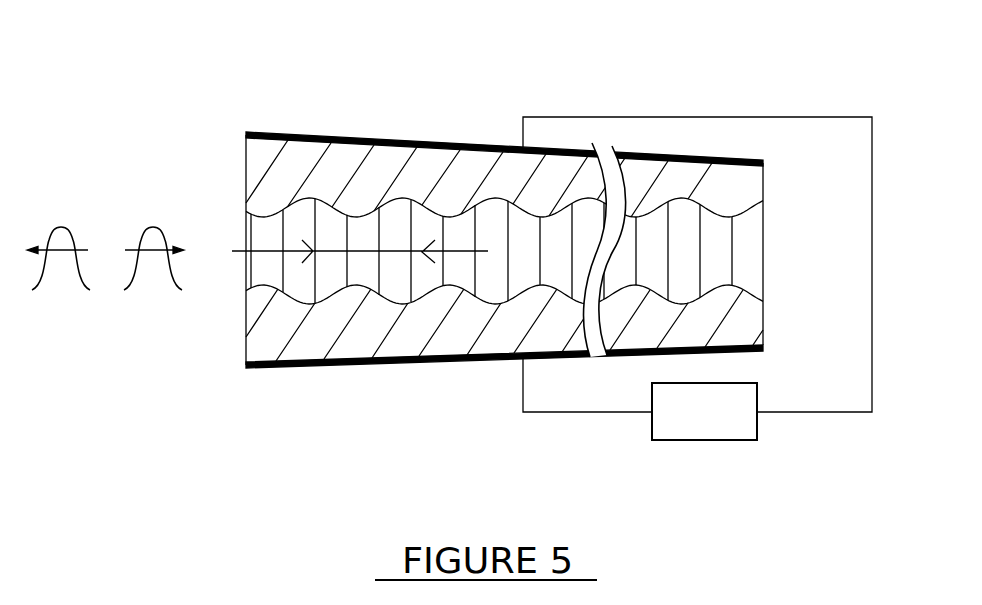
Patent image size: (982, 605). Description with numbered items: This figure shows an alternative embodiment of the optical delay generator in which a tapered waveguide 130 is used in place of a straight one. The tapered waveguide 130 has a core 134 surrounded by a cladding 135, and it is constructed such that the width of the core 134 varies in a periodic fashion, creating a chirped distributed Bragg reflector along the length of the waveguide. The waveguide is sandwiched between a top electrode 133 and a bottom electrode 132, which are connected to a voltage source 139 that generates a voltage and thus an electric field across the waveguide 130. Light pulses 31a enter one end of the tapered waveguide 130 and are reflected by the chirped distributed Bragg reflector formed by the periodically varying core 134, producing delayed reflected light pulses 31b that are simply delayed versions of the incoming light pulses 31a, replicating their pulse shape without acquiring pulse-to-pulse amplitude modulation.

The tapered waveguide 130 is at (247, 70).
The bottom electrode 132 is at (390, 358).
The top electrode 133 is at (392, 138).
The core 134 is at (528, 273).
The cladding 135 is at (483, 172).
The voltage source 139 is at (722, 440).
The light pulses 31a is at (153, 225).
The reflected light pulses 31b is at (60, 225).